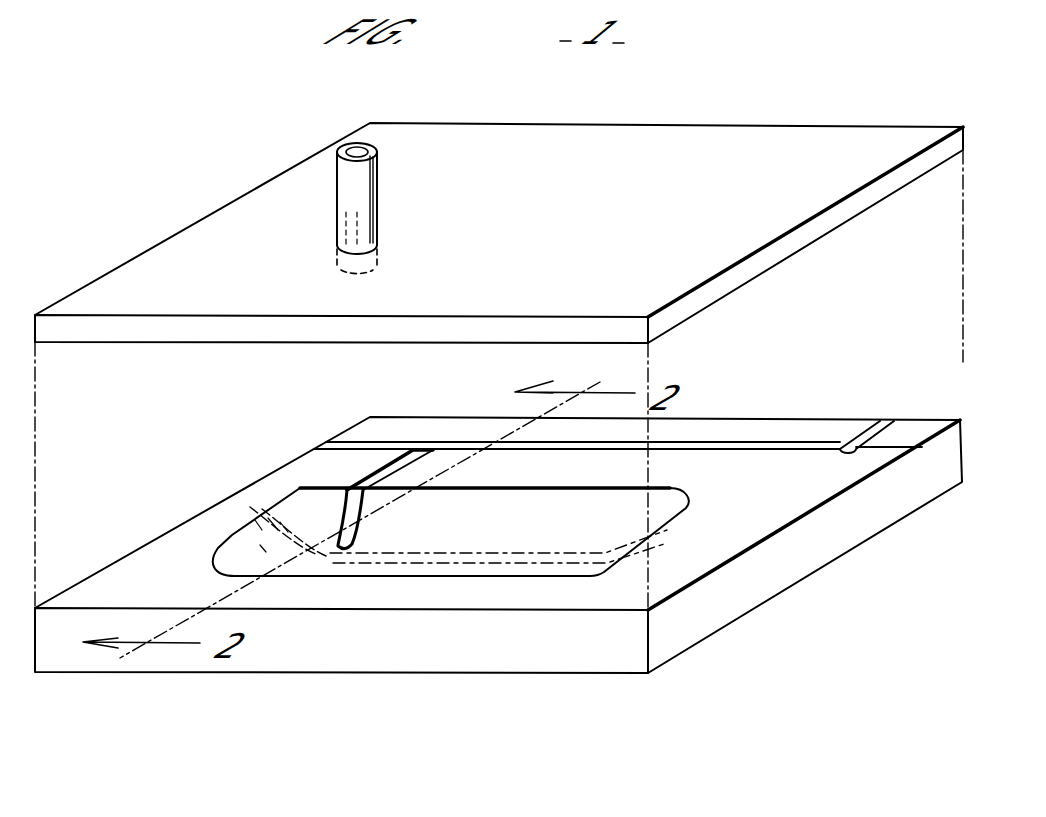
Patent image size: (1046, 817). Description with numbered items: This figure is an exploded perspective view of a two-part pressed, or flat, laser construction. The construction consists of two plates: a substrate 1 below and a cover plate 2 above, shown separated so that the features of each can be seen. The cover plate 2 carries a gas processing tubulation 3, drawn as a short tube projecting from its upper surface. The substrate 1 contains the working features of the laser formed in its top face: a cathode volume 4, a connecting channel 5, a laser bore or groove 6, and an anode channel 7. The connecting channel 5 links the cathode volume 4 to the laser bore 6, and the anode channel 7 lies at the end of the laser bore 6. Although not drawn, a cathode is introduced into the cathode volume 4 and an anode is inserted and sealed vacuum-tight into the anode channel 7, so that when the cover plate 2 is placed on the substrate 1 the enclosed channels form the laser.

The substrate 1 is at (757, 578).
The cover plate 2 is at (712, 150).
The gas processing tubulation 3 is at (343, 173).
The cathode volume 4 is at (463, 542).
The connecting channel 5 is at (398, 484).
The laser bore 6 is at (758, 446).
The anode channel 7 is at (880, 420).